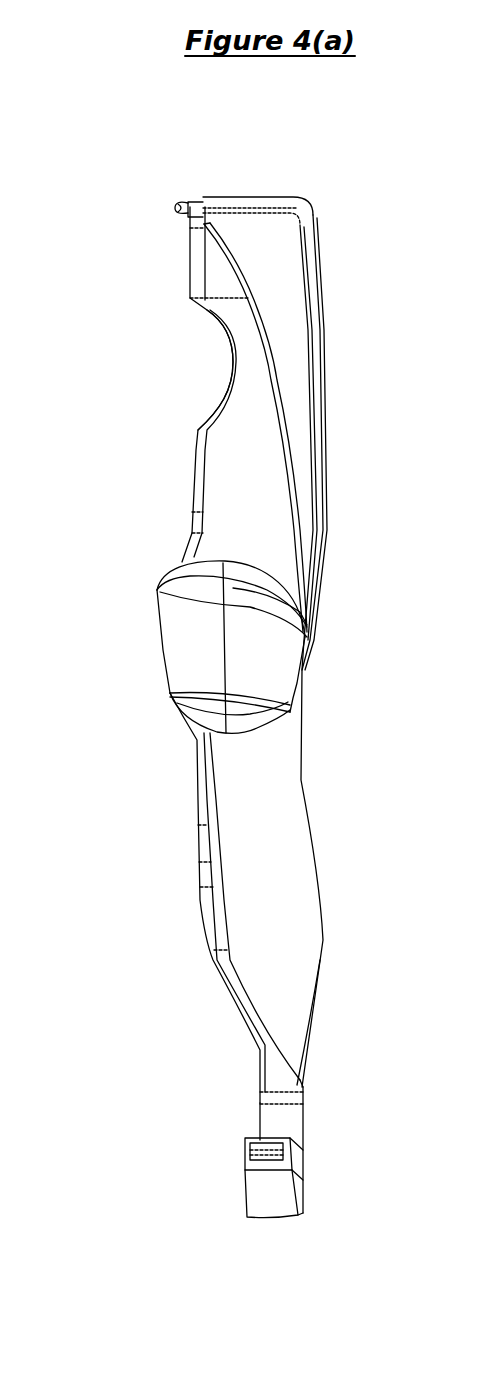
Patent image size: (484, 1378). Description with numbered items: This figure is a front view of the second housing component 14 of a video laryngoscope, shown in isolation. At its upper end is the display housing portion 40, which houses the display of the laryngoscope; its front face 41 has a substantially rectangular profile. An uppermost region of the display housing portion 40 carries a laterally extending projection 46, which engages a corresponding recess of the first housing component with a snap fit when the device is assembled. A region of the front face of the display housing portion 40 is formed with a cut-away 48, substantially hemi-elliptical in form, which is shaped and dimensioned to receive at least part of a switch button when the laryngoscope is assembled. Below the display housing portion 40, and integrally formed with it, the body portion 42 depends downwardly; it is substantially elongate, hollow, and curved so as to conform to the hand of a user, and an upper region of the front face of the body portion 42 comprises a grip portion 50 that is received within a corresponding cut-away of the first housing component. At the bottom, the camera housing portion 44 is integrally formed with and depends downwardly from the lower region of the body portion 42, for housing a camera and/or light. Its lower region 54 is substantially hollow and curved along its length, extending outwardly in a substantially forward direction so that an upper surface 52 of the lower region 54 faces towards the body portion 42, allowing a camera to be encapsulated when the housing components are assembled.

The second housing component 14 is at (107, 203).
The display housing portion 40 is at (293, 278).
The front face 41 is at (280, 387).
The body portion 42 is at (228, 788).
The camera housing portion 44 is at (257, 1108).
The laterally extending projection 46 is at (181, 206).
The cut-away 48 is at (227, 363).
The grip portion 50 is at (202, 663).
The upper surface 52 is at (292, 1125).
The lower region 54 is at (300, 1178).